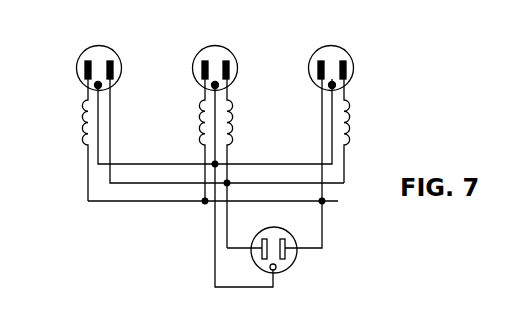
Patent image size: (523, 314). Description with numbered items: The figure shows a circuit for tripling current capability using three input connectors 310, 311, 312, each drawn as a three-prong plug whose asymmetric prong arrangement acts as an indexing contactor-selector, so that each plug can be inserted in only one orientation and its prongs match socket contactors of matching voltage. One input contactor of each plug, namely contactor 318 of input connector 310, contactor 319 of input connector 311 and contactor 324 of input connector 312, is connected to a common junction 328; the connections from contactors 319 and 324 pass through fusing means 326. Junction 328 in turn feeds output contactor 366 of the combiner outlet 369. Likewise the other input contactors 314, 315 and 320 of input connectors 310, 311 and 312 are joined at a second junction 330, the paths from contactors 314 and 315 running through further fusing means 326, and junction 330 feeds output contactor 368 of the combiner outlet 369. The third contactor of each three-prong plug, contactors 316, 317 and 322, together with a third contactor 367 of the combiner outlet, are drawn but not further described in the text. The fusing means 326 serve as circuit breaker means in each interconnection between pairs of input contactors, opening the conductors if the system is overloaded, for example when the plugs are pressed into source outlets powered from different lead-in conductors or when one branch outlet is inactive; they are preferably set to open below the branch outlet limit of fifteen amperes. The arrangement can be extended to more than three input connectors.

The input connector 310 is at (97, 53).
The input connector 311 is at (217, 63).
The input connector 312 is at (329, 54).
The input contactor 314 is at (85, 66).
The first plug ground pin 316 is at (94, 86).
The input contactor 318 is at (113, 62).
The input contactor 315 is at (201, 72).
The second plug ground pin 317 is at (217, 87).
The input contactor 319 is at (229, 72).
The input contactor 320 is at (318, 65).
The third plug ground pin 322 is at (336, 86).
The input contactor 324 is at (347, 62).
The fusing means 326 is at (79, 123).
The junction 328 is at (227, 186).
The junction 330 is at (296, 241).
The output contactor 366 is at (263, 239).
The receptacle ground hole 367 is at (270, 268).
The output contactor 368 is at (284, 239).
The combiner outlet 369 is at (297, 263).